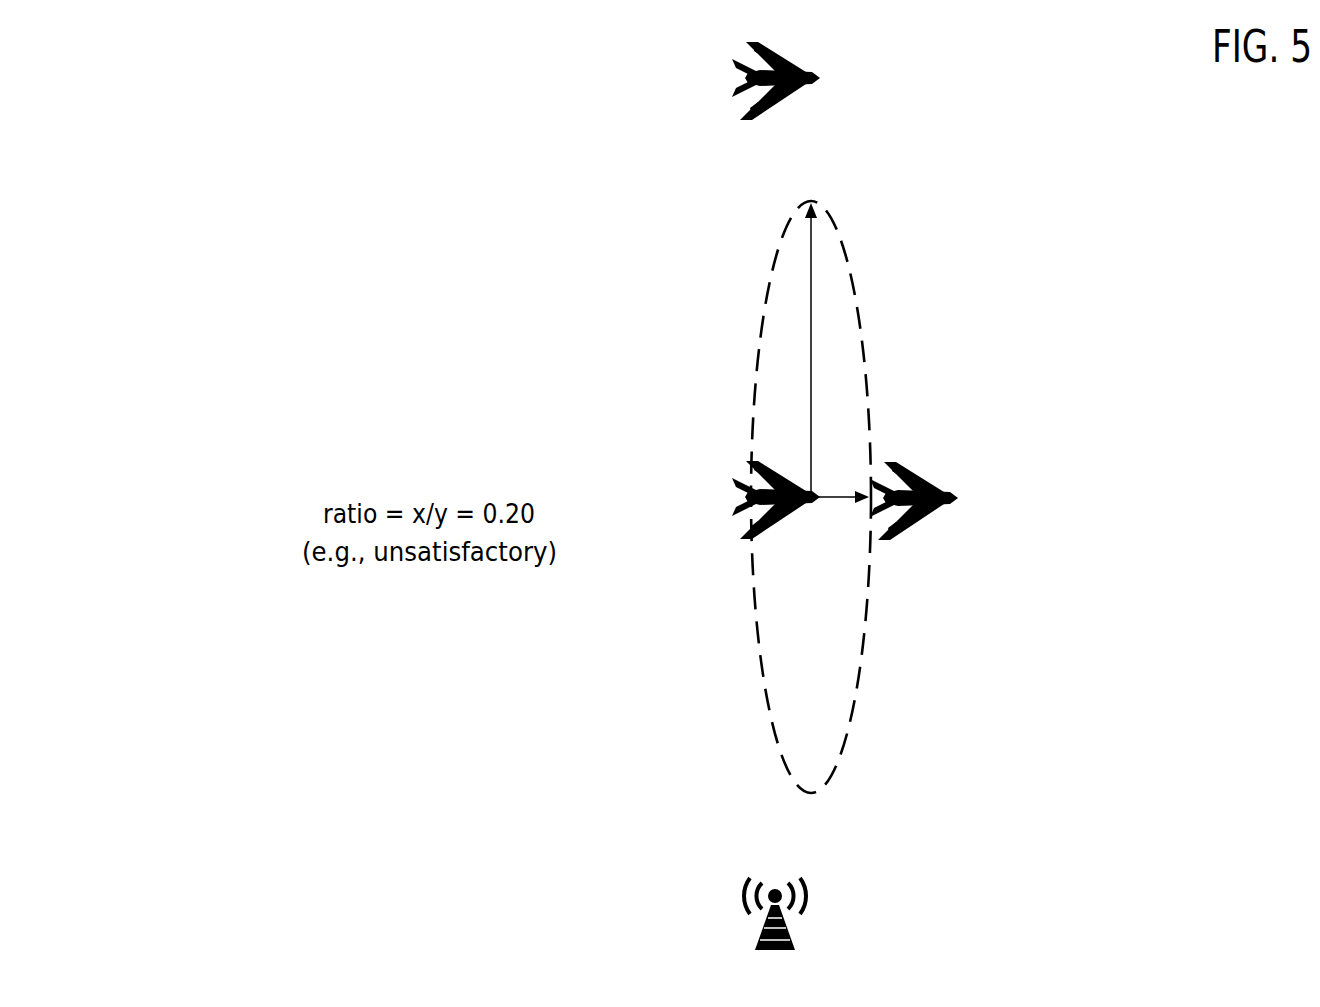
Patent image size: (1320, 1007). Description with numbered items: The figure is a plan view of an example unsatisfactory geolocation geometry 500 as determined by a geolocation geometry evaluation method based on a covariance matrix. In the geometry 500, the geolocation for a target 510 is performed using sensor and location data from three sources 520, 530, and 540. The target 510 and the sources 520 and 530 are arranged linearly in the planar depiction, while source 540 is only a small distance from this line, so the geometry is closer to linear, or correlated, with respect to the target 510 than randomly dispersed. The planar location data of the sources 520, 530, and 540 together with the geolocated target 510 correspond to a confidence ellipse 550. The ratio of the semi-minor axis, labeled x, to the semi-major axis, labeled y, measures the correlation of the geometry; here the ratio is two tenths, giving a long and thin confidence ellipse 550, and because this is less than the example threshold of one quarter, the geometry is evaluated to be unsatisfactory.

The unsatisfactory geolocation geometry 500 is at (262, 154).
The target 510 is at (745, 913).
The source 520 is at (735, 498).
The source 530 is at (735, 80).
The source 540 is at (958, 498).
The confidence ellipse 550 is at (866, 620).